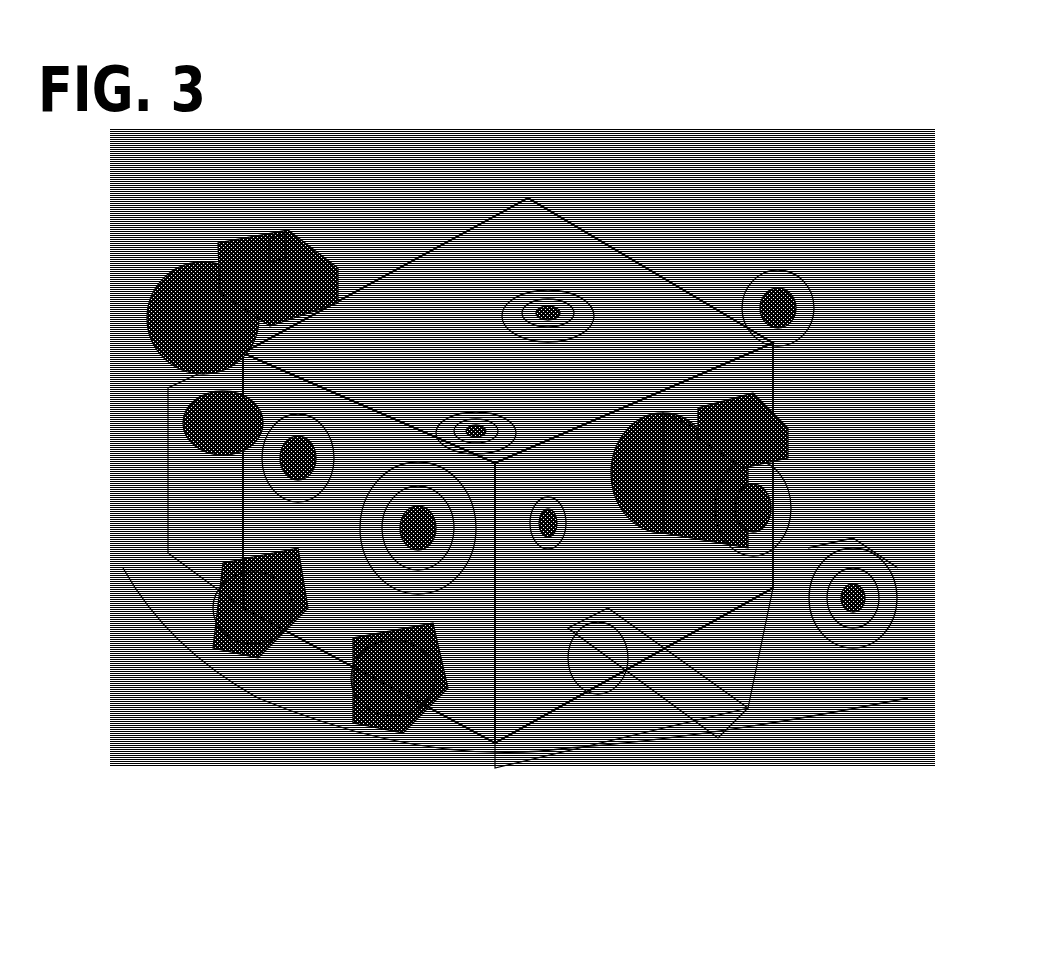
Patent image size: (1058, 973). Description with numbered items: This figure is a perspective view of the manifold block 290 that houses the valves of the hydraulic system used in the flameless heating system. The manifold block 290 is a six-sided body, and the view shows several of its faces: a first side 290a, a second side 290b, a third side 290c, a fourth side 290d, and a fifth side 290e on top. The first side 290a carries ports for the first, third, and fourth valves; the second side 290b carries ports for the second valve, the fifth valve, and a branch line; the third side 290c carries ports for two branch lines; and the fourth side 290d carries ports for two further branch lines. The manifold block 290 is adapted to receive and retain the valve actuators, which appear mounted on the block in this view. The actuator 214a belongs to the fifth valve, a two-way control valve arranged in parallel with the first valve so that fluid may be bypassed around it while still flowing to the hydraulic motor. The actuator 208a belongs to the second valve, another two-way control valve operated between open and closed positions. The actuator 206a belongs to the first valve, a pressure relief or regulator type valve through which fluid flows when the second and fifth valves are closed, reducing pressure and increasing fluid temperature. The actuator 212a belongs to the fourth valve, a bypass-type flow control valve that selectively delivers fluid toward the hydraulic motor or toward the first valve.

The manifold block 290 is at (583, 149).
The first side 290a is at (508, 722).
The second side 290b is at (212, 466).
The third side 290c is at (118, 536).
The fourth side 290d is at (667, 240).
The fifth side 290e is at (477, 247).
The actuator 214a is at (210, 243).
The actuator 208a is at (191, 416).
The actuator 206a is at (787, 405).
The actuator 212a is at (843, 480).